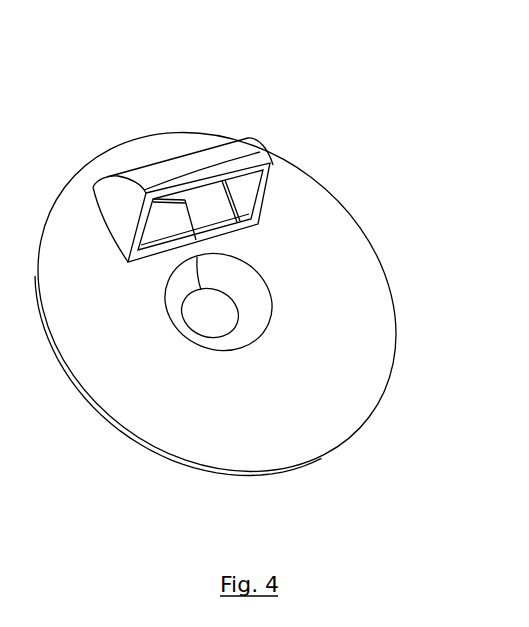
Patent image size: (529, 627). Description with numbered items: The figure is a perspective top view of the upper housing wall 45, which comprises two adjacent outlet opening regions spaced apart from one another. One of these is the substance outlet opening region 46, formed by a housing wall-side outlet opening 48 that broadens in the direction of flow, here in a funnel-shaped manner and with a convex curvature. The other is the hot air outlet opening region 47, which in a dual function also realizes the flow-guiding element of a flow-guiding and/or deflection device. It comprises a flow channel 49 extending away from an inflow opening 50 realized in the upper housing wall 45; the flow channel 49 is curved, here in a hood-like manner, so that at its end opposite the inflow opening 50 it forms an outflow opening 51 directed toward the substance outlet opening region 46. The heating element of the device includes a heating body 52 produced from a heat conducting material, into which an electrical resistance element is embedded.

The upper housing wall 45 is at (373, 349).
The substance outlet opening region 46 is at (272, 283).
The hot air outlet opening region 47 is at (224, 198).
The housing wall-side outlet opening 48 is at (253, 277).
The flow channel 49 is at (120, 200).
The inflow opening 50 is at (208, 217).
The outflow opening 51 is at (179, 217).
The heating body 52 is at (162, 226).